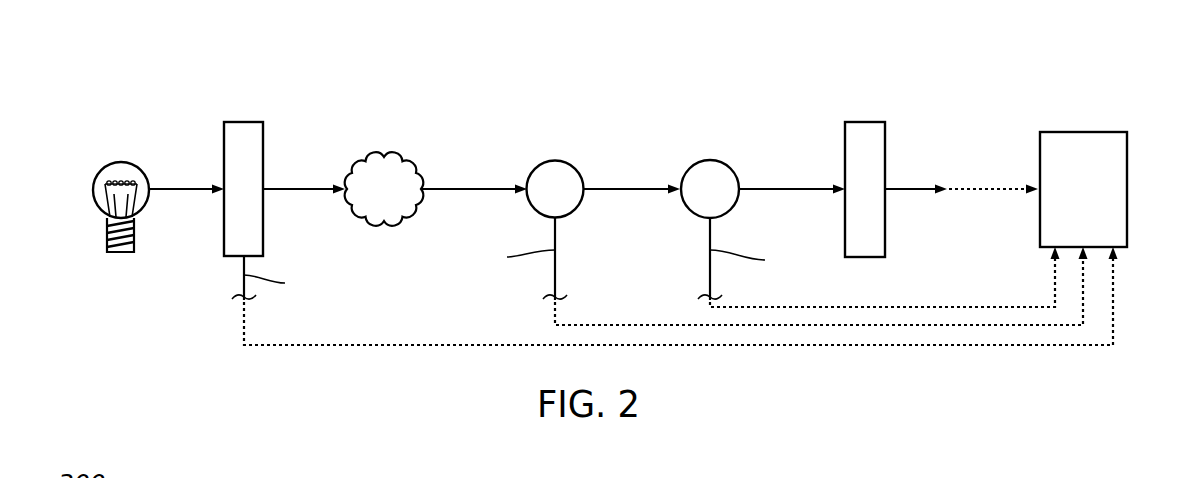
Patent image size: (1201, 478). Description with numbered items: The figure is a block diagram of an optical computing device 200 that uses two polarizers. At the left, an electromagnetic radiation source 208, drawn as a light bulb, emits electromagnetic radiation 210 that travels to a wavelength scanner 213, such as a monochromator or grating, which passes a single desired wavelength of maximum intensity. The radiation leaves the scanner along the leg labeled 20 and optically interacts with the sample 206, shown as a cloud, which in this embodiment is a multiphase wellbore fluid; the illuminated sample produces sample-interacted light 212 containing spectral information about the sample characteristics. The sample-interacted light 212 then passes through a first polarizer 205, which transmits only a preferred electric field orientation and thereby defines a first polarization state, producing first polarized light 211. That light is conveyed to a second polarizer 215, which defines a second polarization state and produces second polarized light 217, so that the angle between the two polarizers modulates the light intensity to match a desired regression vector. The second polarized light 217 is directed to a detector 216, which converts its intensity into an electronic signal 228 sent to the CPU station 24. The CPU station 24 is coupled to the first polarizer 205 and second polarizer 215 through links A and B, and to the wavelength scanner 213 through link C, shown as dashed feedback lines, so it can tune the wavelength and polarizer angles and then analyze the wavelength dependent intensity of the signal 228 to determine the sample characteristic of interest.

The optical computing device 200 is at (130, 56).
The electromagnetic radiation source 208 is at (107, 162).
The electromagnetic radiation 210 is at (195, 189).
The wavelength scanner 213 is at (243, 122).
The polarized light beam 20 is at (303, 189).
The sample 206 is at (406, 199).
The sample-interacted light 212 is at (453, 189).
The first polarizer 205 is at (553, 160).
The first polarized light 211 is at (603, 189).
The second polarizer 215 is at (703, 160).
The second polarized light 217 is at (757, 189).
The detector 216 is at (867, 122).
The electronic signal 228 is at (904, 189).
The CPU station 24 is at (1068, 217).